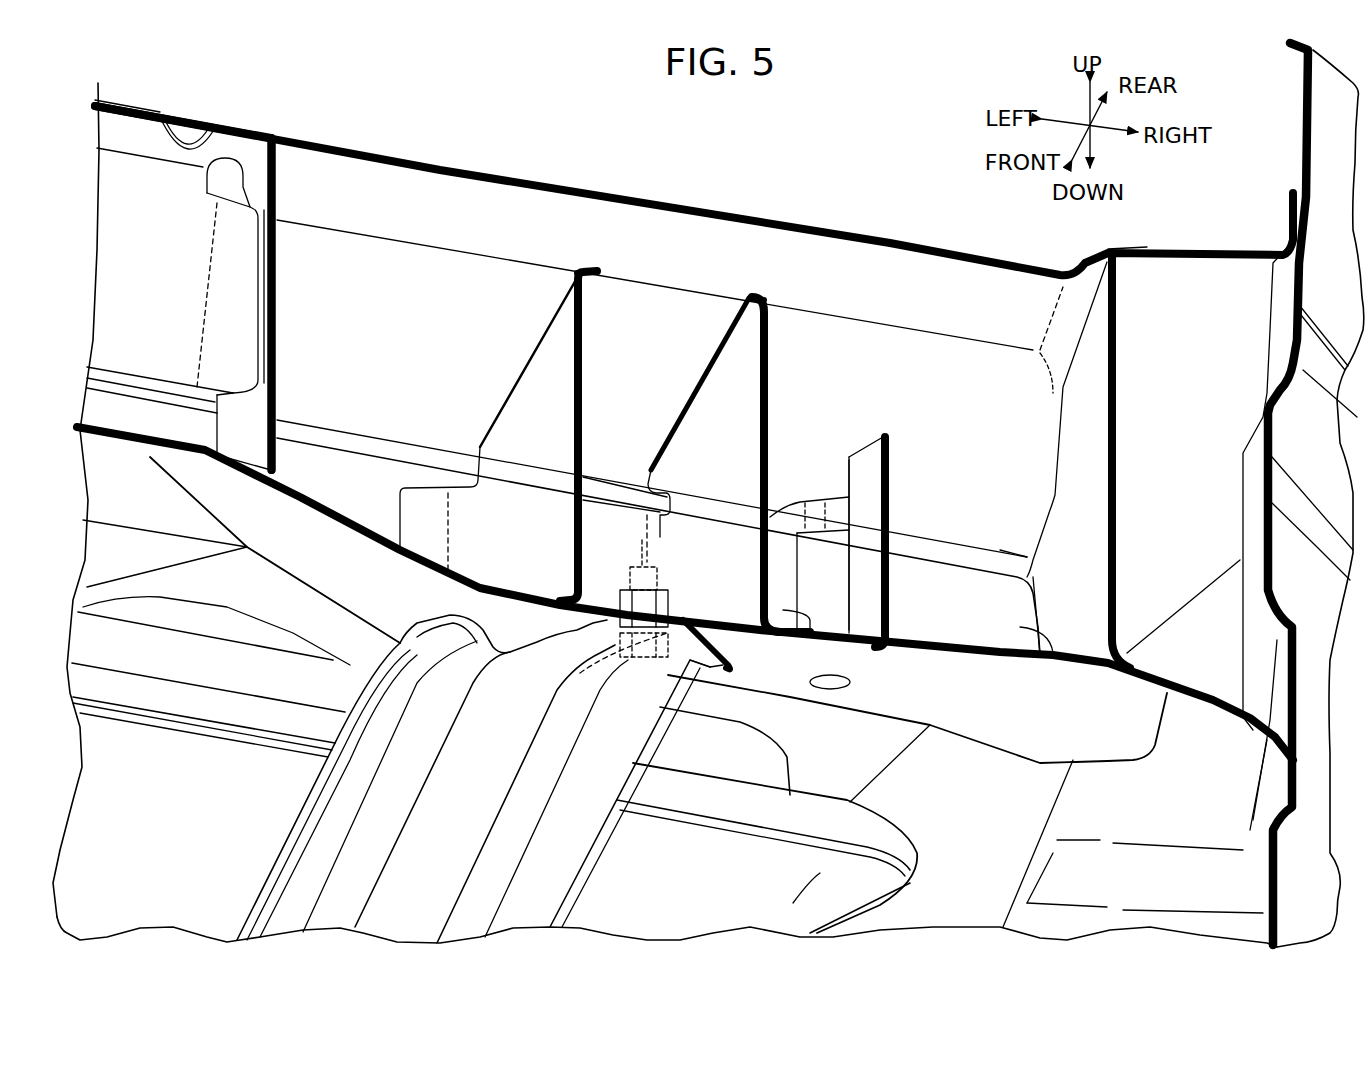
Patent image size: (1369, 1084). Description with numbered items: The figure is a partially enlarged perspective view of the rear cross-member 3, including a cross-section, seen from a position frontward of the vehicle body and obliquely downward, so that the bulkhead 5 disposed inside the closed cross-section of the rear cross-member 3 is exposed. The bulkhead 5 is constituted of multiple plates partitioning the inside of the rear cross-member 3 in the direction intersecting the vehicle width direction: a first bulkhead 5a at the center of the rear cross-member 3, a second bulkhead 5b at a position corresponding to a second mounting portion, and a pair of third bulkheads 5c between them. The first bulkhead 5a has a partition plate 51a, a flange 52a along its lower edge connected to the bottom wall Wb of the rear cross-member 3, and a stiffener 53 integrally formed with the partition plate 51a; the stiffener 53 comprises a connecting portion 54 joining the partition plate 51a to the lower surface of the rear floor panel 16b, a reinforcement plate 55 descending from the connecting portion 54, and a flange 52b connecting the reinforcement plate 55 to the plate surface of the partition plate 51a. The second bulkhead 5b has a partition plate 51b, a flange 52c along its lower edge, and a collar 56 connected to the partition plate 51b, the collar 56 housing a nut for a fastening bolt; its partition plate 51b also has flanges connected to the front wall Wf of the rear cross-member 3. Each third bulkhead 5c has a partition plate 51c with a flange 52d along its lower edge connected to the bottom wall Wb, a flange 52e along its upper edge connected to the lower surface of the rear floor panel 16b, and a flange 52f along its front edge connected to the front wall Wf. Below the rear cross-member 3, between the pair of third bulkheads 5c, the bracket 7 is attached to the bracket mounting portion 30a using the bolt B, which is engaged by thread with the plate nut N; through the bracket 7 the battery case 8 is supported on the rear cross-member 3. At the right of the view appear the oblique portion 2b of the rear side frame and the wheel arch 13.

The oblique portion 2b is at (1193, 253).
The rear cross-member 3 is at (990, 703).
The bulkhead 5 is at (344, 274).
The first bulkhead 5a is at (293, 170).
The second bulkhead 5b is at (903, 423).
The third bulkhead 5c is at (780, 357).
The bracket 7 is at (330, 813).
The battery case 8 is at (733, 893).
The wheel arch 13 is at (1297, 123).
The rear floor panel 16b is at (450, 172).
The bracket mounting portion 30a is at (680, 605).
The partition plate 51a is at (252, 403).
The partition plate 51b is at (867, 520).
The partition plate 51c is at (560, 423).
The flange 52a is at (287, 480).
The flange 52b is at (233, 300).
The flange 52c is at (893, 640).
The flange 52d is at (804, 682).
The flange 52e is at (587, 267).
The flange 52f is at (422, 510).
The stiffener 53 is at (170, 183).
The connecting portion 54 is at (120, 130).
The reinforcement plate 55 is at (123, 277).
The collar 56 is at (827, 557).
The plate nut N is at (680, 593).
The bolt B is at (600, 653).
The bottom wall Wb is at (327, 557).
The front wall Wf is at (1020, 623).